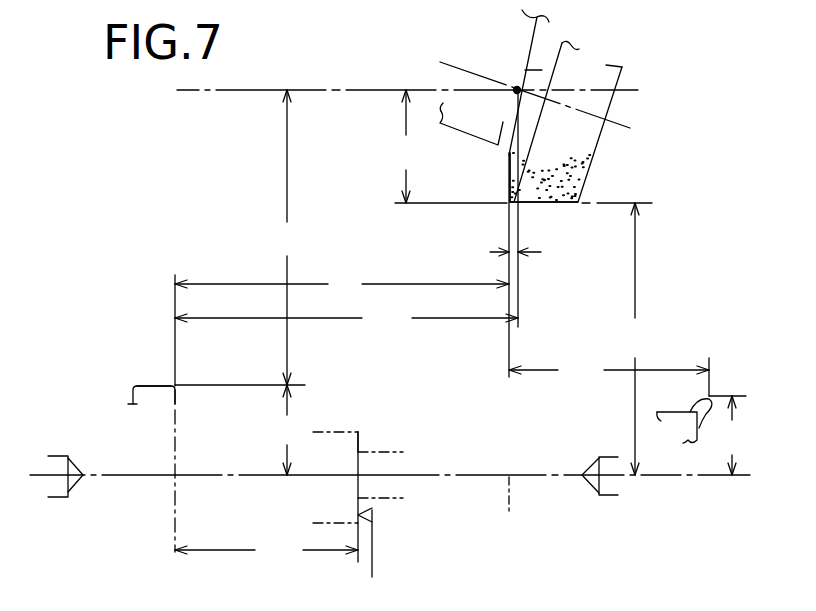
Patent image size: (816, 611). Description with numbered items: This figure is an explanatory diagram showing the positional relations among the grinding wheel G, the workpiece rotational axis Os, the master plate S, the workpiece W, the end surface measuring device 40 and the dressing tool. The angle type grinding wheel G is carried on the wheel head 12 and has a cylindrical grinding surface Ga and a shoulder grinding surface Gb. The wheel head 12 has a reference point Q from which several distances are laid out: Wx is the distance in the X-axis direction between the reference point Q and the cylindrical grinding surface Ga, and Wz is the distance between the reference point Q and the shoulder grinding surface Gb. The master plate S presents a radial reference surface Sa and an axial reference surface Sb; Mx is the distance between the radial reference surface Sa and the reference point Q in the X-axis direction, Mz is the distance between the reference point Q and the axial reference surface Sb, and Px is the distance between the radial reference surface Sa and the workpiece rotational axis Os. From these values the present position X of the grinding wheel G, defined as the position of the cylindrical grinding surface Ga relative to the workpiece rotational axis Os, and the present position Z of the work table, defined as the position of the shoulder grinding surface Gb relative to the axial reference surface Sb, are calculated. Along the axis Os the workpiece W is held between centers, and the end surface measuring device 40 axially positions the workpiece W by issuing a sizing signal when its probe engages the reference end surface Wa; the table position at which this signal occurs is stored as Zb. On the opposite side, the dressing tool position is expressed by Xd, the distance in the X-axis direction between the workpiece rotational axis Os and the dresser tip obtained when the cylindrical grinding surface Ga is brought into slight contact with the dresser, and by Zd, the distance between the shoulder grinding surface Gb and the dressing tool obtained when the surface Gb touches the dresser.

The wheel head 12 is at (549, 22).
The reference point of the wheel head Q is at (514, 87).
The grinding wheel G is at (590, 158).
The shoulder grinding surface Gb is at (510, 182).
The cylindrical grinding surface Ga is at (556, 203).
The distance between reference point Q and cylindrical grinding surface Ga Wx is at (406, 146).
The distance between radial reference surface Sa and reference point Q Mx is at (286, 237).
The distance between radial reference surface Sa and workpiece rotational axis Os Px is at (291, 430).
The present position of the grinding wheel X is at (637, 339).
The dresser radial position Xd is at (737, 435).
The present position of the work table Z is at (342, 285).
The distance between reference point Q and axial reference surface Sb Mz is at (346, 323).
The dresser traverse position Zd is at (609, 374).
The table position at which the measuring device issues a sizing signal Zb is at (266, 550).
The distance between reference point Q and shoulder grinding surface Gb Wz is at (535, 253).
The master plate S is at (133, 404).
The radial reference surface Sa is at (147, 386).
The axial reference surface Sb is at (177, 402).
The workpiece W is at (390, 487).
The reference end surface Wa is at (360, 433).
The end surface measuring device 40 is at (373, 546).
The workpiece rotational axis Os is at (522, 511).